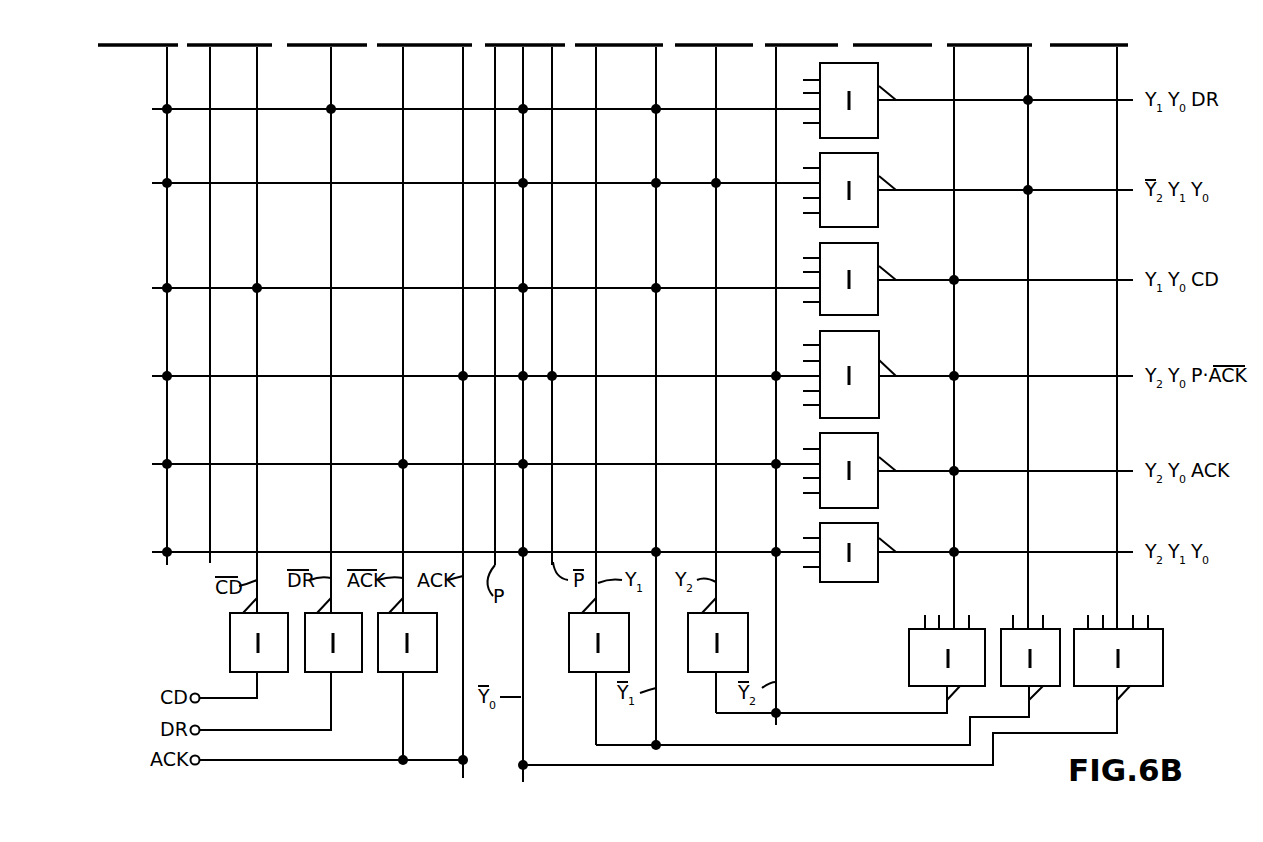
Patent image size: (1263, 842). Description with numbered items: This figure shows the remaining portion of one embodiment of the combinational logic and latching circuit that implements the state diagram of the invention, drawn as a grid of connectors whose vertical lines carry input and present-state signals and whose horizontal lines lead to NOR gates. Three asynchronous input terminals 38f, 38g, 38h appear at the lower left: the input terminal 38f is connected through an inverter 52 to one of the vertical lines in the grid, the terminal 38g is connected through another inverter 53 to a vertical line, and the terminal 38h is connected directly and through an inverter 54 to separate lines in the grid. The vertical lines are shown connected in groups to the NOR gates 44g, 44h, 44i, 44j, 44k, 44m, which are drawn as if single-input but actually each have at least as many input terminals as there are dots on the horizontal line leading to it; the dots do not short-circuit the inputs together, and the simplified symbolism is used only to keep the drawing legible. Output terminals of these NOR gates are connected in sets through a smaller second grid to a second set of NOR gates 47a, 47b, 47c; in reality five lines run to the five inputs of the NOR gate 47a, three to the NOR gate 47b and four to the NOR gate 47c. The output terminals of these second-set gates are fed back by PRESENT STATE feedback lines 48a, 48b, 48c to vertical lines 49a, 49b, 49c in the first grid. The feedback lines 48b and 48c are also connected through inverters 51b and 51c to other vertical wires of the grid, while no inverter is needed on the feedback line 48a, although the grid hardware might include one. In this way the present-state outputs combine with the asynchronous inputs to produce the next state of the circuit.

The NOR gate 44g is at (872, 76).
The NOR gate 44h is at (872, 160).
The NOR gate 44i is at (872, 250).
The NOR gate 44j is at (872, 343).
The NOR gate 44k is at (872, 445).
The NOR gate 44m is at (872, 532).
The NOR gate 47a is at (1148, 660).
The NOR gate 47b is at (1050, 636).
The NOR gate 47c is at (917, 640).
The PRESENT STATE feedback line 48a is at (1096, 731).
The PRESENT STATE feedback line 48b is at (826, 744).
The PRESENT STATE feedback line 48c is at (885, 710).
The vertical line 49a is at (525, 739).
The vertical line 49b is at (658, 720).
The vertical line 49c is at (778, 617).
The inverter 51b is at (583, 658).
The inverter 51c is at (728, 622).
The inverter 52 is at (272, 660).
The inverter 53 is at (345, 660).
The inverter 54 is at (418, 660).
The input terminal 38f is at (195, 690).
The input terminal 38g is at (192, 727).
The input terminal 38h is at (199, 758).